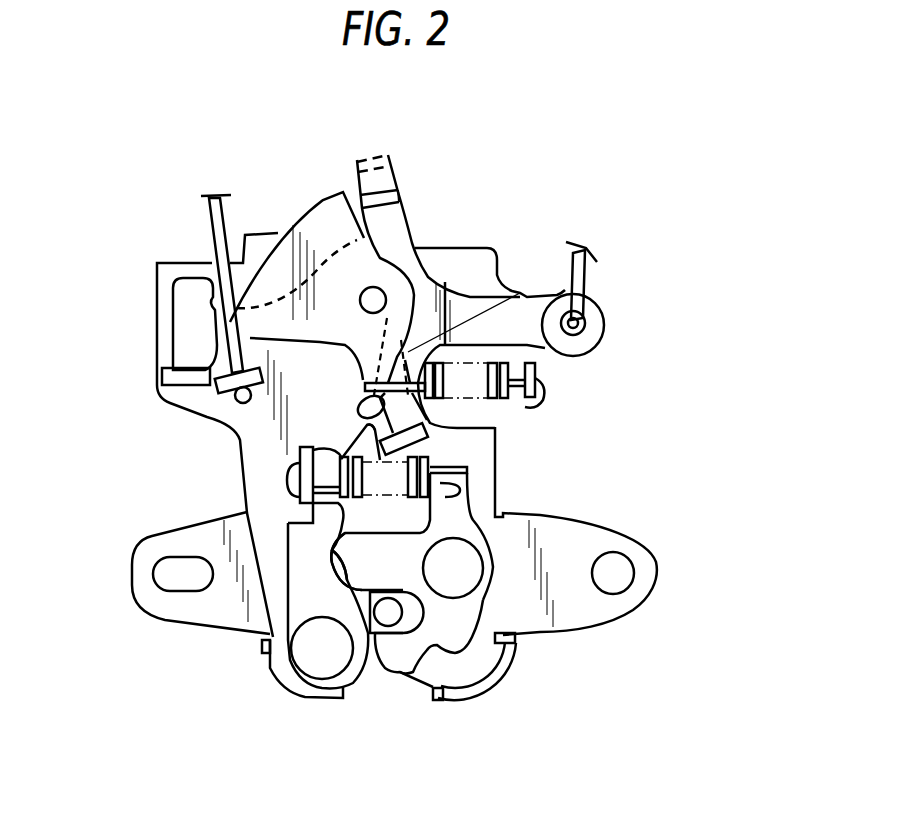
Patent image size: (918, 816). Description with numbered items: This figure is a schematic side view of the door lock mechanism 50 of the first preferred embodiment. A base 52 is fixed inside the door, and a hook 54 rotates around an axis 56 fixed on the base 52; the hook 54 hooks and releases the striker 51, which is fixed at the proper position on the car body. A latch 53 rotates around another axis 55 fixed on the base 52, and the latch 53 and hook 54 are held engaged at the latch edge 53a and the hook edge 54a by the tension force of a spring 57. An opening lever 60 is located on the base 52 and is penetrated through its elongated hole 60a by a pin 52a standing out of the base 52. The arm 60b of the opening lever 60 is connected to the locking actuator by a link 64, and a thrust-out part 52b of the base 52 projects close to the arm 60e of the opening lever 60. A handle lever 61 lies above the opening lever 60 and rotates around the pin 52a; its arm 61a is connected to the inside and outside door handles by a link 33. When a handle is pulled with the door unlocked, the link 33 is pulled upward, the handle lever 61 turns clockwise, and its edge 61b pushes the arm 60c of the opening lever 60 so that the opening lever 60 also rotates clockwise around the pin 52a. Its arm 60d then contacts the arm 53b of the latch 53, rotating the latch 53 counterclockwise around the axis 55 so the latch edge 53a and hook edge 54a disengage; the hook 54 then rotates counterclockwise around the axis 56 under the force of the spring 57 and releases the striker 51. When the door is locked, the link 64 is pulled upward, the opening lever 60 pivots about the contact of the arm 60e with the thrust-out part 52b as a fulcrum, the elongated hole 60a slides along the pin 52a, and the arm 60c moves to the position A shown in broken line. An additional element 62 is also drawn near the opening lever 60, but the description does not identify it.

The link 33 is at (207, 220).
The door lock mechanism 50 is at (690, 595).
The striker 51 is at (390, 620).
The base 52 is at (233, 473).
The pin 52a is at (381, 289).
The thrust-out part 52b is at (170, 377).
The latch 53 is at (269, 665).
The latch edge 53a is at (337, 567).
The arm of the latch 53b is at (357, 430).
The hook 54 is at (445, 652).
The hook edge 54a is at (345, 550).
The axis 55 is at (328, 657).
The axis 56 is at (465, 577).
The spring 57 is at (420, 450).
The opening lever 60 is at (440, 287).
The elongated hole 60a is at (520, 293).
The arm of the opening lever 60b is at (607, 323).
The arm of the opening lever 60c is at (402, 192).
The arm of the opening lever 60d is at (432, 436).
The arm of the opening lever 60e is at (185, 335).
The handle lever 61 is at (292, 217).
The arm of the handle lever 61a is at (227, 353).
The edge of the handle lever 61b is at (345, 215).
The open lever spring 62 is at (467, 402).
The link 64 is at (587, 283).
The position A is at (438, 279).